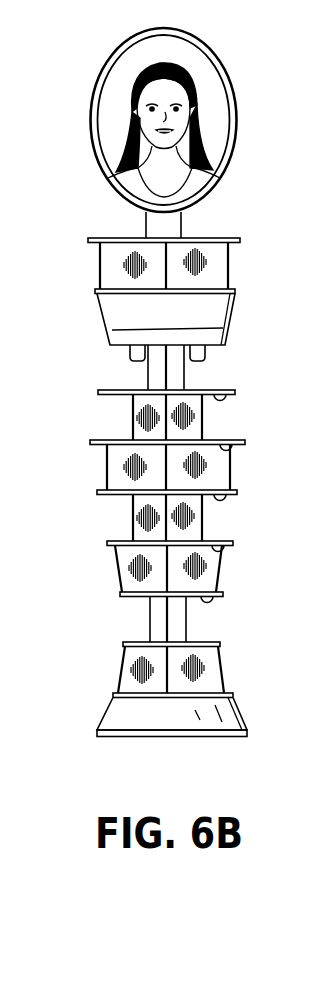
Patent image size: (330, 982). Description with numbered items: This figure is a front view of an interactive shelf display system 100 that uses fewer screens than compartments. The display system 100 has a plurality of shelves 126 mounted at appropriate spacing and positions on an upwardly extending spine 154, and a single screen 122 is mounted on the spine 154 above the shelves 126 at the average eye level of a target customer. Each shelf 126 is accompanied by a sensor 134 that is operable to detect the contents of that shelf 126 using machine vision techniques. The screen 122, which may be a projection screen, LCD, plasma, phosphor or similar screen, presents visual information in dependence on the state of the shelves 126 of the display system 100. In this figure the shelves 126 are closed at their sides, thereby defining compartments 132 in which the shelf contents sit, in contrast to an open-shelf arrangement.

The display system 100 is at (92, 52).
The screen 122 is at (236, 103).
The spine 154 is at (181, 234).
The shelves 126 is at (240, 241).
The compartments 132 is at (215, 260).
The sensor 134 is at (223, 402).